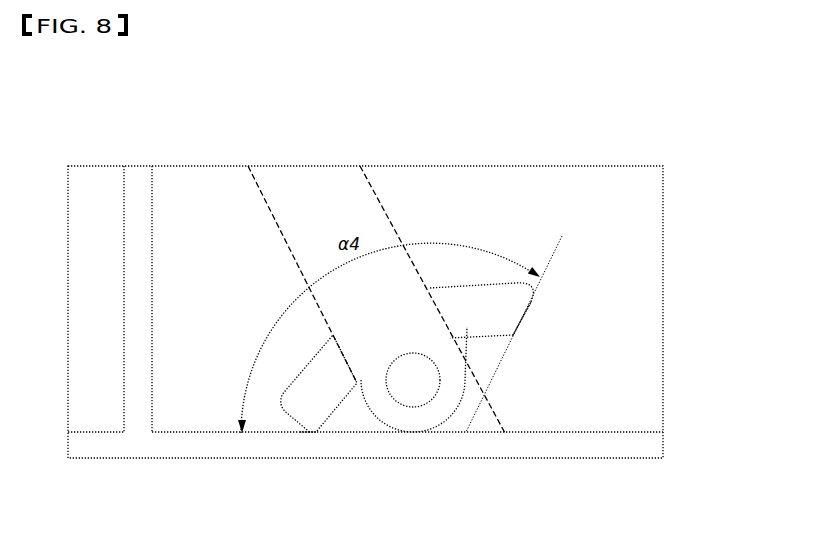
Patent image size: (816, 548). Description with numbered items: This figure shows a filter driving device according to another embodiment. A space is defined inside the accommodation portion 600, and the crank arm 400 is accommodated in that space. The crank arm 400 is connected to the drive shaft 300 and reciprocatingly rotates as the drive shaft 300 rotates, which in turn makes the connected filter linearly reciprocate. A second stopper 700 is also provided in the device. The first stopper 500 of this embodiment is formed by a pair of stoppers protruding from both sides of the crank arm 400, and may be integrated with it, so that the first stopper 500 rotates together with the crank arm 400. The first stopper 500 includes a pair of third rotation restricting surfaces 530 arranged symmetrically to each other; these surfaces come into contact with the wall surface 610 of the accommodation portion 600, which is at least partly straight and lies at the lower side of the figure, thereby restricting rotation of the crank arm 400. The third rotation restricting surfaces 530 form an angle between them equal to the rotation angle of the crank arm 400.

The accommodation portion 600 is at (80, 140).
The wall surface 610 is at (167, 400).
The second stopper 700 is at (134, 167).
The crank arm 400 is at (313, 180).
The drive shaft 300 is at (399, 408).
The first stopper 500 is at (270, 412).
The third rotation restricting surfaces 530 is at (314, 428).